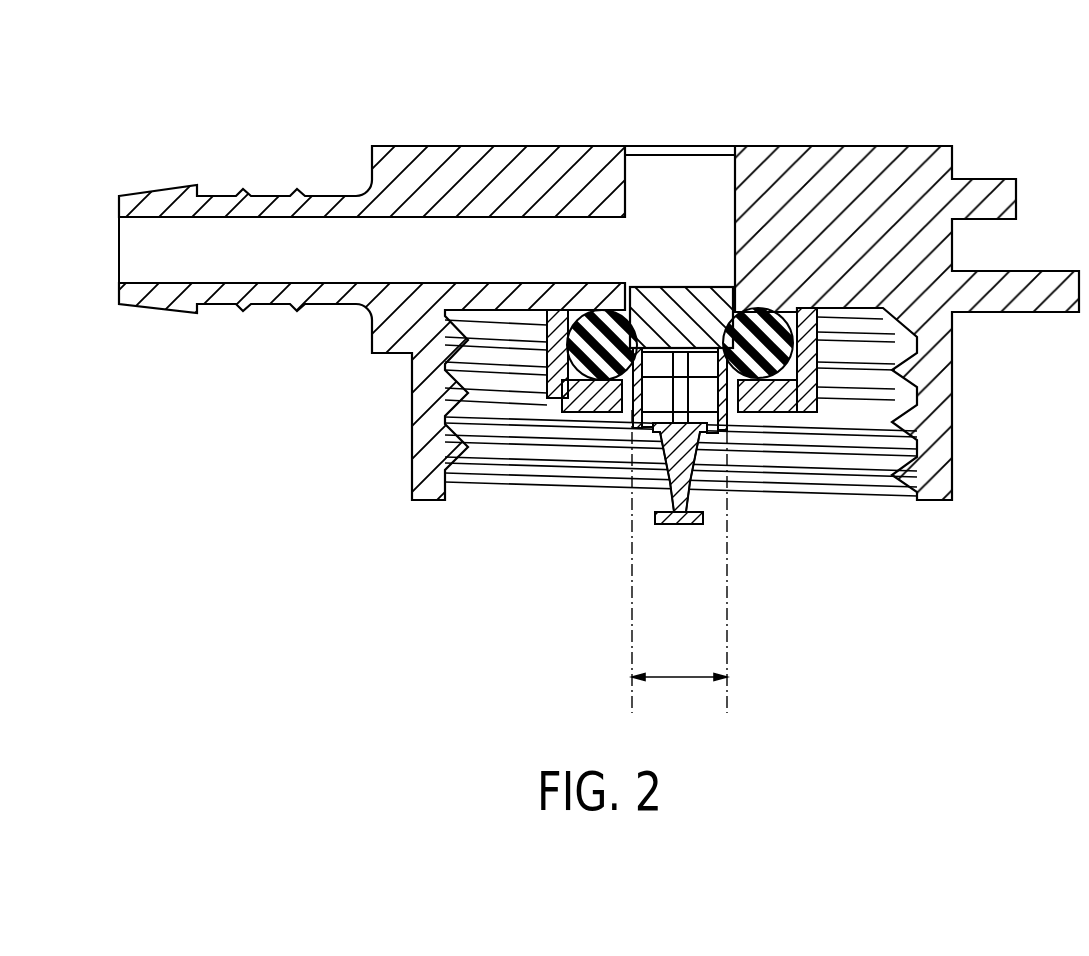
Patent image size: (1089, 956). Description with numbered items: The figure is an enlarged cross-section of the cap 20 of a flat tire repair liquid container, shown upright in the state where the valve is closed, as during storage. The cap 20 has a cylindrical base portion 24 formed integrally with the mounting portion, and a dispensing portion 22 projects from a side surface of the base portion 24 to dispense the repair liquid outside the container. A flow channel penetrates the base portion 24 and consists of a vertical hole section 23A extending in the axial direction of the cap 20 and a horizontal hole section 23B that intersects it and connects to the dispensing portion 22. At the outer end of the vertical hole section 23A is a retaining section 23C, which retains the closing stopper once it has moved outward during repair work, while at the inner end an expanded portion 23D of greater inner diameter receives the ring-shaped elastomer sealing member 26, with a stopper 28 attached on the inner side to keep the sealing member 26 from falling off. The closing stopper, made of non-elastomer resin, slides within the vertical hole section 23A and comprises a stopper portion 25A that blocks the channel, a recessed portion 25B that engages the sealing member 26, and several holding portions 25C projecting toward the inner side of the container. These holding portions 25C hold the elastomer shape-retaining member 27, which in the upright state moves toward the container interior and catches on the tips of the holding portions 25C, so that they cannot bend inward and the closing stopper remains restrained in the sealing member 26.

The cap 20 is at (438, 573).
The dispensing portion 22 is at (245, 196).
The vertical hole section 23A is at (790, 205).
The horizontal hole section 23B is at (483, 242).
The retaining section 23C is at (683, 168).
The expanded portion 23D is at (598, 412).
The base portion 24 is at (413, 158).
The stopper portion 25A is at (665, 287).
The recessed portion 25B is at (565, 347).
The holding portions 25C is at (640, 415).
The sealing member 26 is at (793, 412).
The shape-retaining member 27 is at (665, 523).
The stopper 28 is at (767, 417).